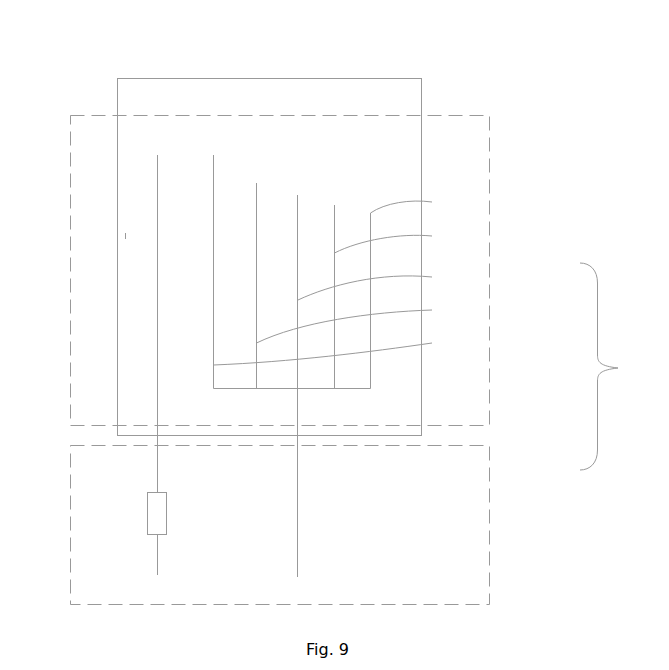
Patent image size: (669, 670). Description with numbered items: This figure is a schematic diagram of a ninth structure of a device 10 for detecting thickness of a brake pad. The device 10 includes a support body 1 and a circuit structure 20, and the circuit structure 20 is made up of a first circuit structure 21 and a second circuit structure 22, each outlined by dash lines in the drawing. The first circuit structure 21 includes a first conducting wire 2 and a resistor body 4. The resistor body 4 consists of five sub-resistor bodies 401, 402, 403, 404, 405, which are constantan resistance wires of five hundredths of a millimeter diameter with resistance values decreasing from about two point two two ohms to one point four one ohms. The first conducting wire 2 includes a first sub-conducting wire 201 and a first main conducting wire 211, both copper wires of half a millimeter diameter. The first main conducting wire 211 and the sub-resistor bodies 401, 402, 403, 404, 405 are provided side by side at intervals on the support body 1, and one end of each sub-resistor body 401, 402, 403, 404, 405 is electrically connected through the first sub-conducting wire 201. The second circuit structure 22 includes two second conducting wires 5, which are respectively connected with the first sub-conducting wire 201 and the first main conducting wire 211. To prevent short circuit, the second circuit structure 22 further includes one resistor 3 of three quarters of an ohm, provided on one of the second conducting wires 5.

The device for detecting thickness of a brake pad 10 is at (225, 36).
The support body 1 is at (422, 78).
The first conducting wire 2 is at (133, 407).
The circuit structure 20 is at (613, 366).
The first circuit structure 21 is at (490, 270).
The second circuit structure 22 is at (490, 477).
The first sub-conducting wire 201 is at (298, 405).
The first main conducting wire 211 is at (158, 279).
The resistor 3 is at (148, 532).
The resistor body 4 is at (188, 248).
The second conducting wire 5 is at (158, 471).
The sub-resistor body 401 is at (343, 349).
The sub-resistor body 402 is at (365, 285).
The sub-resistor body 403 is at (385, 291).
The sub-resistor body 404 is at (404, 296).
The sub-resistor body 405 is at (422, 203).